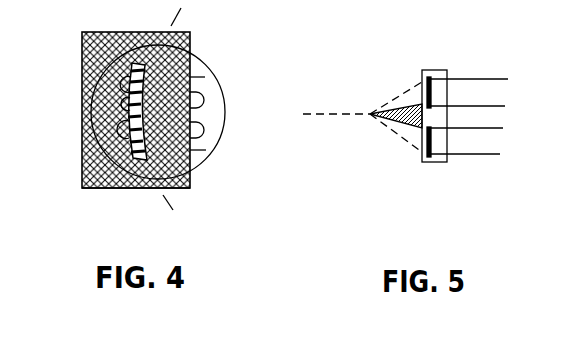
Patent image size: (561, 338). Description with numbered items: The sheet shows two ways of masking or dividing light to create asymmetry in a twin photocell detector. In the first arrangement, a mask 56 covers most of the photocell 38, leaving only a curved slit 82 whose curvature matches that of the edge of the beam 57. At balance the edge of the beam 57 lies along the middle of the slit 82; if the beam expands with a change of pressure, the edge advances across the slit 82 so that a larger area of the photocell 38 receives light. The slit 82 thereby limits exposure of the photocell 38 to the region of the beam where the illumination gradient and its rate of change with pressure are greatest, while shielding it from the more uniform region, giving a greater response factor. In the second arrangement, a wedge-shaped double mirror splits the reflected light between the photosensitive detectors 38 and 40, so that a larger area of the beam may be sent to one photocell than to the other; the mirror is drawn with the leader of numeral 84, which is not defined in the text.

In FIG. 4, the photocell 38 is at (121, 146).
In FIG. 5, the photocell 38 is at (432, 142).
In FIG. 4, the photosensitive detector 40 is at (205, 77).
In FIG. 5, the photosensitive detector 40 is at (432, 95).
In FIG. 4, the mask 56 is at (100, 32).
In FIG. 4, the edge of the beam 57 is at (159, 190).
In FIG. 4, the slit 82 is at (163, 32).
In FIG. 5, the beam cone 84 is at (401, 100).